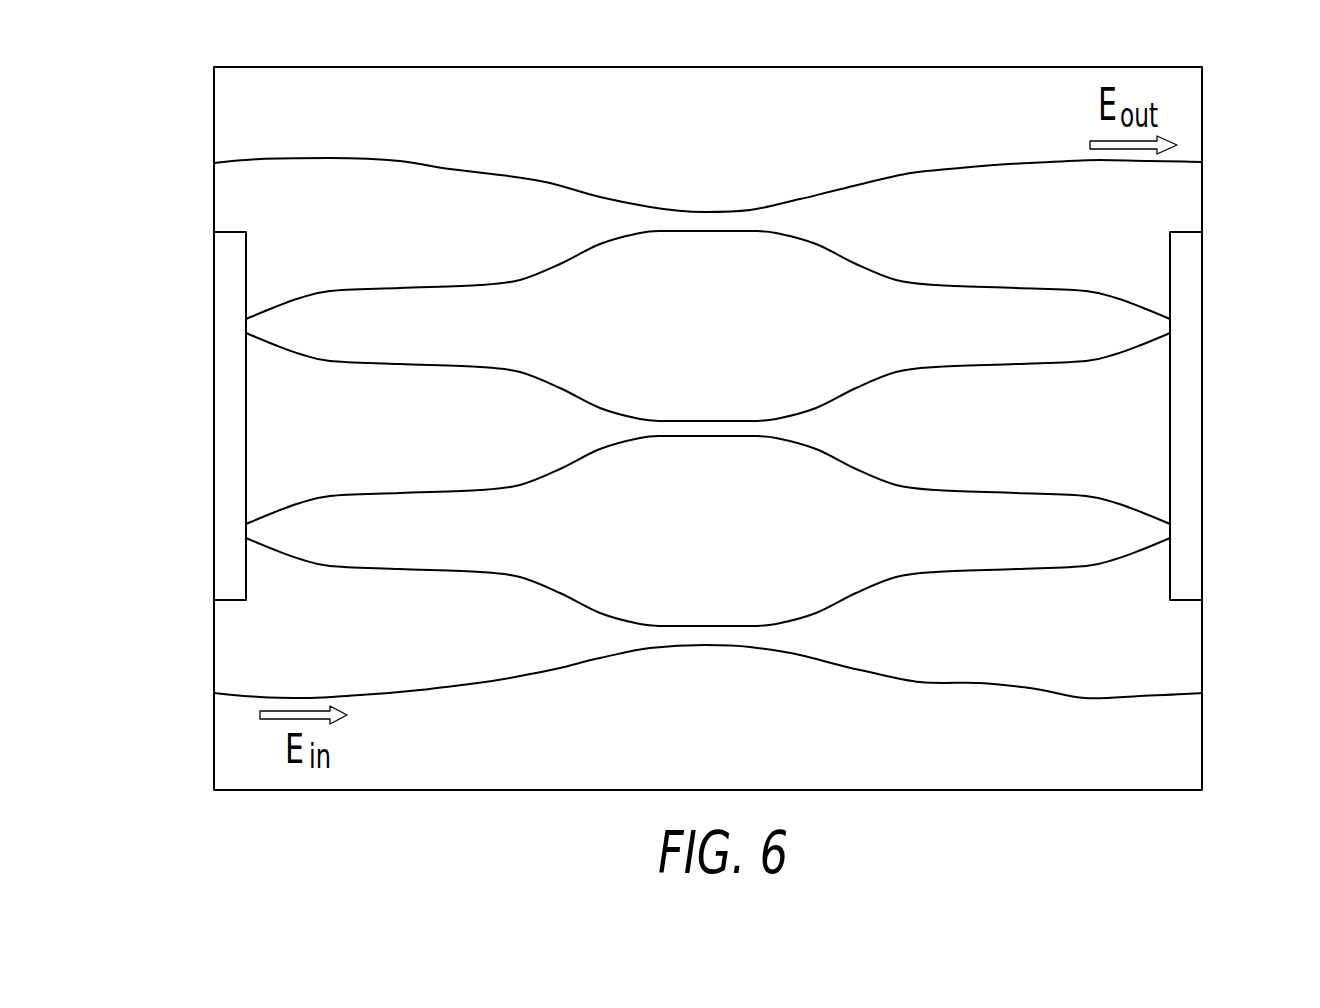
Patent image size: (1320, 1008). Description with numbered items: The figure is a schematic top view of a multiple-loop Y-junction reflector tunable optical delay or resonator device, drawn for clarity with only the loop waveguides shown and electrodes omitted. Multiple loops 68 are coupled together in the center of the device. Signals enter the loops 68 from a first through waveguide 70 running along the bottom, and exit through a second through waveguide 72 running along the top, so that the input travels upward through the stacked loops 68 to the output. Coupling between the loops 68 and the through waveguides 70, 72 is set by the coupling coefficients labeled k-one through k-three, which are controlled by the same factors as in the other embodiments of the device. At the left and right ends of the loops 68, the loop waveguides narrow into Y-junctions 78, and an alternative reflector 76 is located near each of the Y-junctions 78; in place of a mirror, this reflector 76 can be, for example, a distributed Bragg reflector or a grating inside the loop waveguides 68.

The loop waveguides 68 is at (923, 283).
The first through waveguide 70 is at (955, 683).
The second through waveguide 72 is at (837, 190).
The reflector 76 is at (229, 282).
The Y-junctions 78 is at (304, 329).